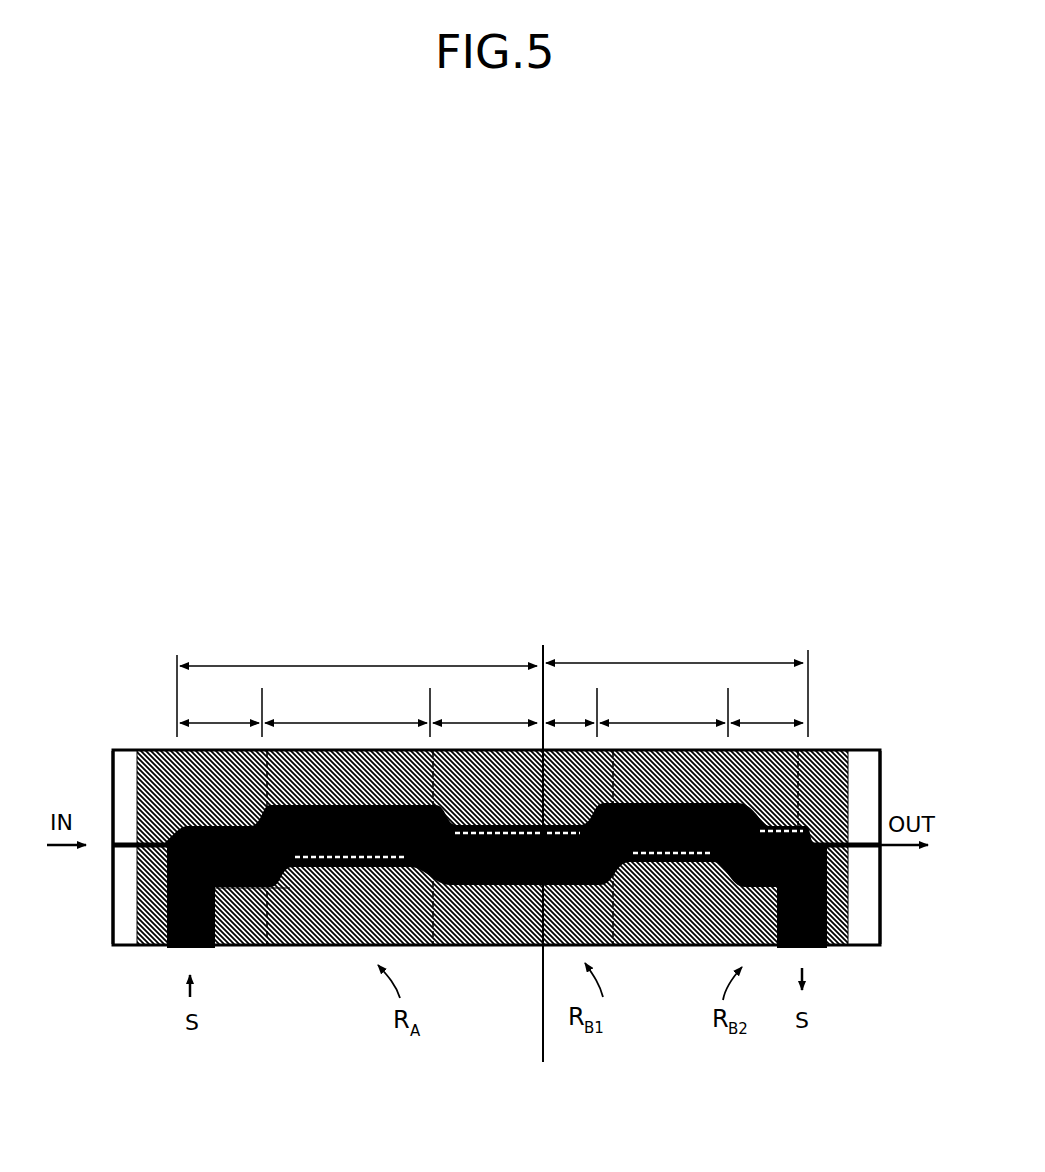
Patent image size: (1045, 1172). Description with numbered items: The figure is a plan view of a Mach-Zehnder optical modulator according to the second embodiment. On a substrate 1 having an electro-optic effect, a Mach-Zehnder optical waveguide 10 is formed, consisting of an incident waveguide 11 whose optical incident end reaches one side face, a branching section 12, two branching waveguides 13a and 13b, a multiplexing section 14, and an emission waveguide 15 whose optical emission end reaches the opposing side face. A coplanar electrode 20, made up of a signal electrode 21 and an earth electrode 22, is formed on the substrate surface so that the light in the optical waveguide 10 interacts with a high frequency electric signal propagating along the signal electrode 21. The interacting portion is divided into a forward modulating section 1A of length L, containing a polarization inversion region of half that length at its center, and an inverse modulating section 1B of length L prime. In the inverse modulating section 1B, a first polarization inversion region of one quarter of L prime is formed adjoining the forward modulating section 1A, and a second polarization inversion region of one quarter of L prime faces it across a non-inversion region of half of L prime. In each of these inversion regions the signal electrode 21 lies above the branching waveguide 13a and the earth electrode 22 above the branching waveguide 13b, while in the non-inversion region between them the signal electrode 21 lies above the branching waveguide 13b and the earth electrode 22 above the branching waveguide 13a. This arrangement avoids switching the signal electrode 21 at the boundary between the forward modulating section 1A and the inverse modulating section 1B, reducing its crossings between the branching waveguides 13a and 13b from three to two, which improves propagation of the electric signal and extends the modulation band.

The substrate 1 is at (868, 775).
The Mach-Zehnder optical waveguide 10 is at (122, 815).
The incident waveguide 11 is at (112, 903).
The branching section 12 is at (153, 850).
The branching waveguide 13a is at (225, 906).
The branching waveguide 13b is at (272, 900).
The multiplexing section 14 is at (862, 847).
The emission waveguide 15 is at (880, 910).
The coplanar electrode 20 is at (520, 1003).
The signal electrode 21 is at (473, 886).
The earth electrode 22 is at (480, 947).
The forward modulating section 1A is at (542, 1072).
The inverse modulating section 1B is at (825, 1072).